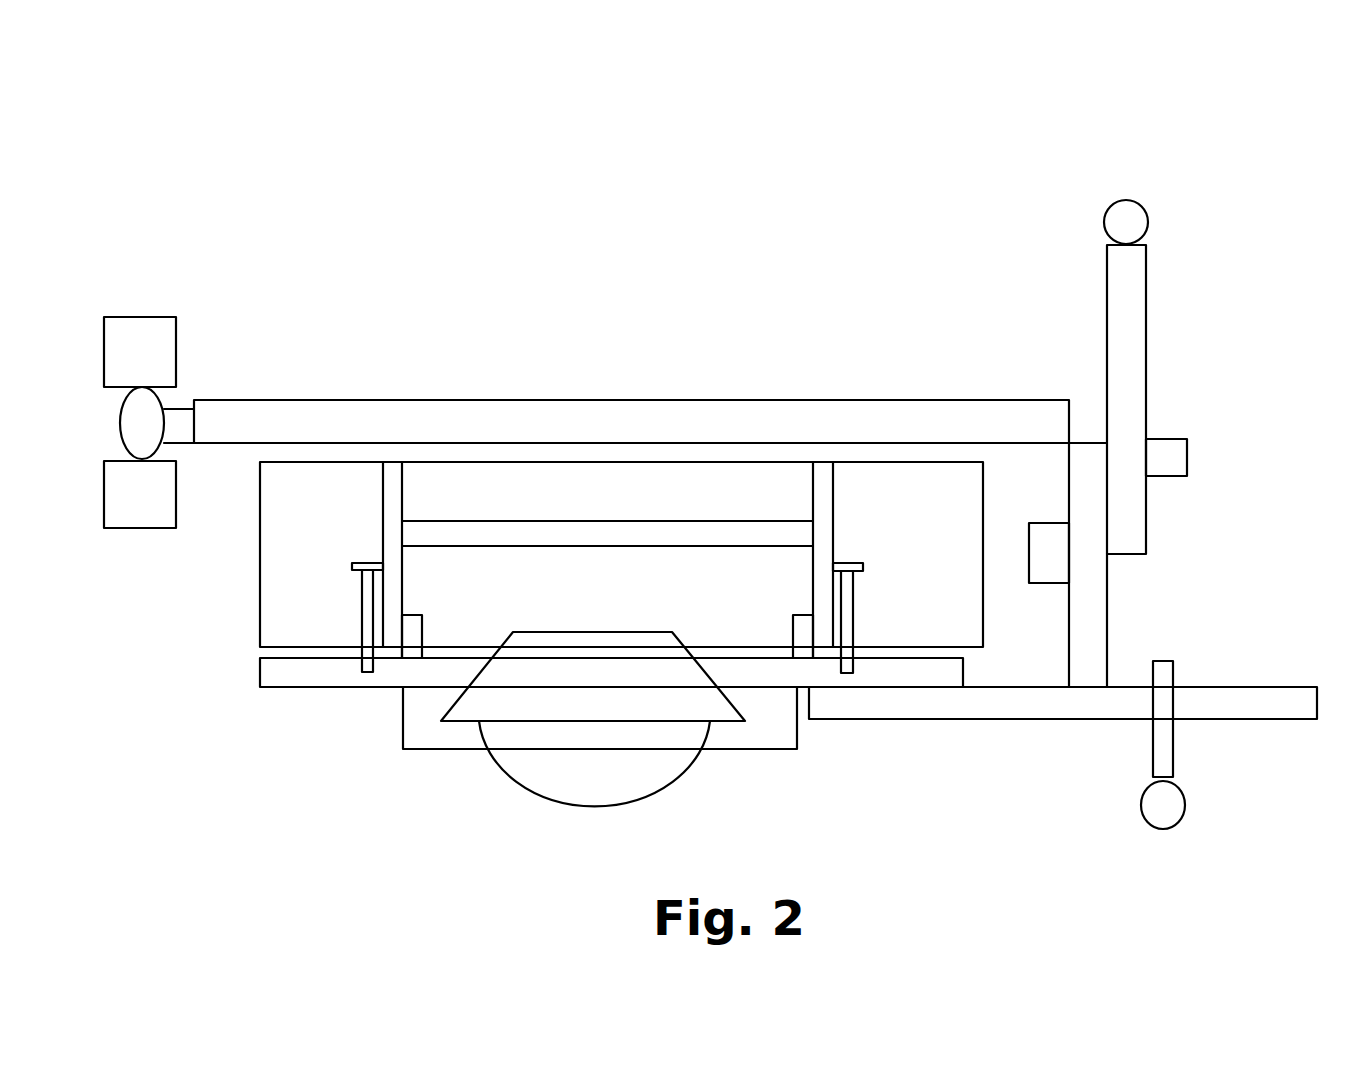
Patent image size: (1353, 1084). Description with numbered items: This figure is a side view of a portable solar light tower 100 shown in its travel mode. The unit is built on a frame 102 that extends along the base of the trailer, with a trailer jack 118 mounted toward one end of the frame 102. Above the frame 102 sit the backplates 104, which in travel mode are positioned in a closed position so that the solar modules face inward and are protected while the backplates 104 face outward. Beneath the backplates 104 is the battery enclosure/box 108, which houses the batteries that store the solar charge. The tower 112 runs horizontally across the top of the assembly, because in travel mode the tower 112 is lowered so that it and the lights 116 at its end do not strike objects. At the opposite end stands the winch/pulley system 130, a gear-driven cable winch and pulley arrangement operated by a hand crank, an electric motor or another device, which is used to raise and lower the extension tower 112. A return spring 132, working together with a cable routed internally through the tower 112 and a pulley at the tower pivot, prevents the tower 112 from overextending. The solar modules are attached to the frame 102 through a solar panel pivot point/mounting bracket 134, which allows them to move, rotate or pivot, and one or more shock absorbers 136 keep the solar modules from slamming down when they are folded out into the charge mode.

The portable solar light tower 100 is at (224, 92).
The frame 102 is at (988, 710).
The backplates 104 is at (285, 550).
The battery enclosure/box 108 is at (403, 731).
The tower 112 is at (495, 400).
The lights 116 is at (176, 358).
The trailer jack 118 is at (1157, 740).
The winch/pulley system 130 is at (1148, 229).
The return spring 132 is at (1043, 572).
The solar panel pivot point/mounting bracket 134 is at (793, 632).
The shock absorbers 136 is at (362, 592).